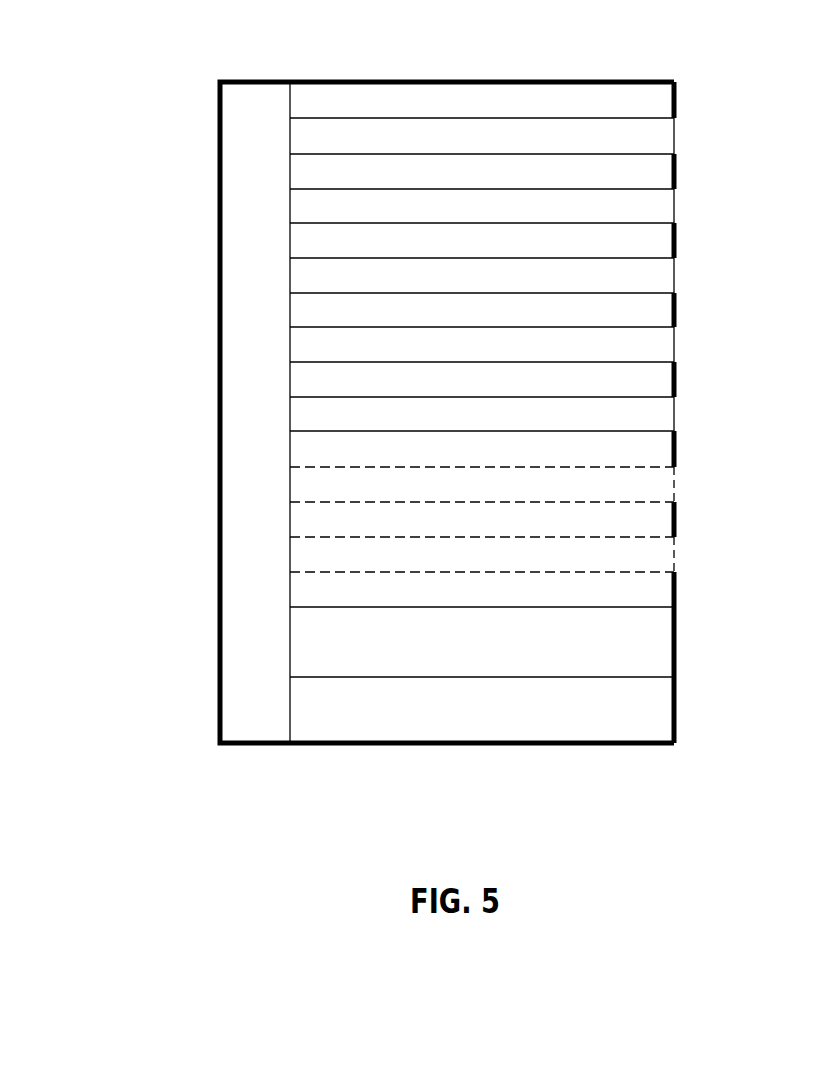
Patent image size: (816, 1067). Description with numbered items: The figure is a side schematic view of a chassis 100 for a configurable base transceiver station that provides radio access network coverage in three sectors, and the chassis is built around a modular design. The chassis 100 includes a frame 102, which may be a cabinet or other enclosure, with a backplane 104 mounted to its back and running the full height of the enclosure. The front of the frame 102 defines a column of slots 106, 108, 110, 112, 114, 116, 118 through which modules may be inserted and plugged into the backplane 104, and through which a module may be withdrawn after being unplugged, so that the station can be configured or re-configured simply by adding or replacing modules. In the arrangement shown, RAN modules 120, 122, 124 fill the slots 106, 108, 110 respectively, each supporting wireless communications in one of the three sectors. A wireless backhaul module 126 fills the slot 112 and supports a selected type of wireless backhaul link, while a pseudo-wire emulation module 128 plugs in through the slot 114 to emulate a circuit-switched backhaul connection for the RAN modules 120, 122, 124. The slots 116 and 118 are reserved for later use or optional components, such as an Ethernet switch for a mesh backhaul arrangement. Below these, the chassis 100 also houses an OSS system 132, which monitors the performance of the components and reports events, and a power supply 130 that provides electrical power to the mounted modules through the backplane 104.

The chassis 100 is at (108, 834).
The frame 102 is at (428, 82).
The backplane 104 is at (265, 412).
The slot 106 is at (673, 137).
The slot 108 is at (673, 207).
The slot 110 is at (673, 277).
The slot 112 is at (673, 347).
The slot 114 is at (673, 417).
The slot 116 is at (673, 487).
The slot 118 is at (673, 555).
The RAN module 120 is at (568, 147).
The RAN module 122 is at (568, 217).
The RAN module 124 is at (568, 287).
The wireless backhaul module 126 is at (638, 357).
The pseudo-wire emulation (PWE) module 128 is at (568, 426).
The power supply 130 is at (572, 724).
The OSS system 132 is at (568, 654).